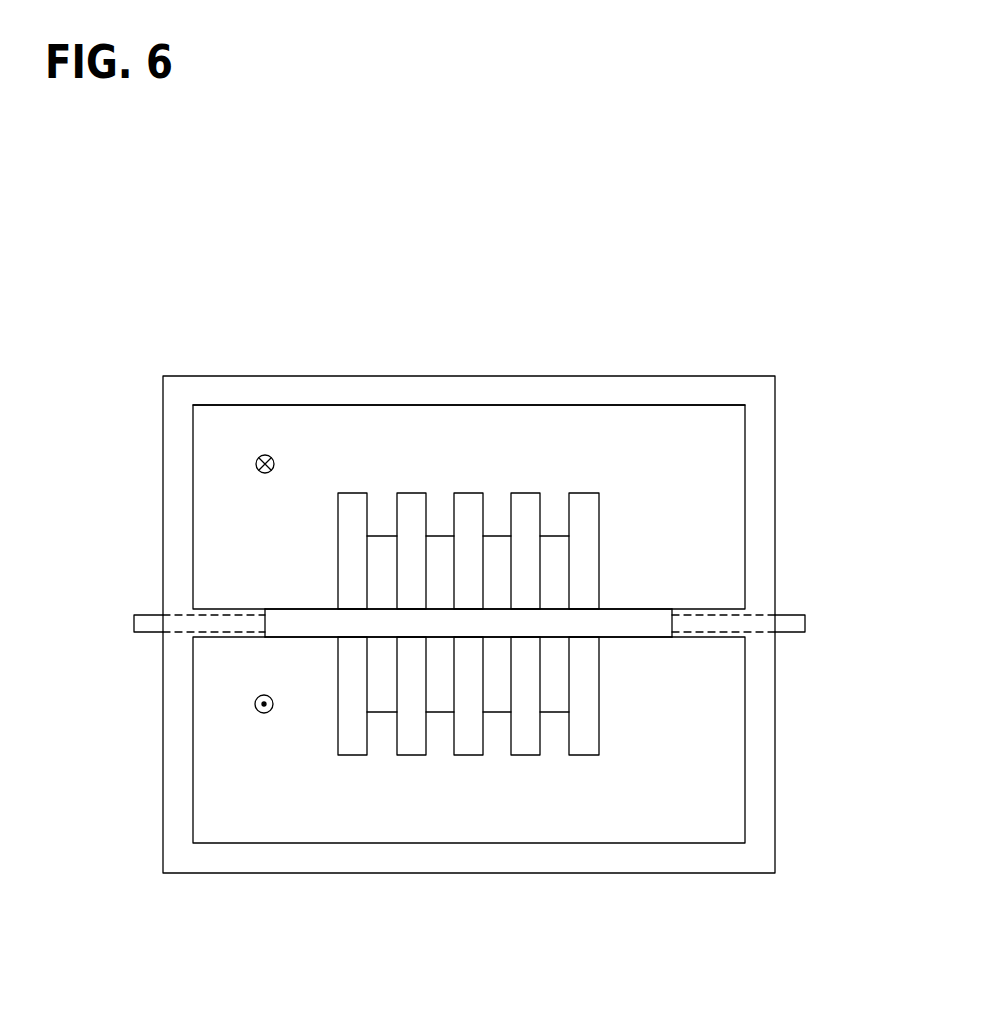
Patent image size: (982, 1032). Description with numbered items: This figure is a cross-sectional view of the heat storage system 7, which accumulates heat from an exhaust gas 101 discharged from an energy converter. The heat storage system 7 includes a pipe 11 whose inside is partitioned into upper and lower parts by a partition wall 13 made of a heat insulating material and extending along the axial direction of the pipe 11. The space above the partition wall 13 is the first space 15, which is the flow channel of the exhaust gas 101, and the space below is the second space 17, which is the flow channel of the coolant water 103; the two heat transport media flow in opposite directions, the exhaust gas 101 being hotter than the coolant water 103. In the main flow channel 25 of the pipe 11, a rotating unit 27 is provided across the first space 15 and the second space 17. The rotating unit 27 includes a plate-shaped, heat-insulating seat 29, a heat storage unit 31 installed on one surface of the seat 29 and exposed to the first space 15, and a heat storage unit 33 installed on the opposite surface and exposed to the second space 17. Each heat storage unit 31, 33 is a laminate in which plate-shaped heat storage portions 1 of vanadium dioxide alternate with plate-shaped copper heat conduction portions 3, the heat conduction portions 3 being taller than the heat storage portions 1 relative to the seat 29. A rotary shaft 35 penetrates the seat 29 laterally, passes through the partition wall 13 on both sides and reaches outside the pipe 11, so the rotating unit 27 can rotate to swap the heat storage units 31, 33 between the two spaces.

The heat storage system 7 is at (801, 343).
The pipe 11 is at (705, 376).
The partition wall 13 is at (218, 640).
The first space 15 is at (670, 478).
The second space 17 is at (670, 770).
The main flow channel 25 is at (460, 443).
The rotating unit 27 is at (583, 493).
The seat 29 is at (633, 627).
The heat storage unit 31 is at (468, 493).
The heat storage unit 33 is at (470, 757).
The rotary shaft 35 is at (134, 621).
The heat storage portion 1 is at (378, 544).
The heat conduction portion 3 is at (352, 508).
The exhaust gas 101 is at (265, 455).
The coolant water 103 is at (265, 714).